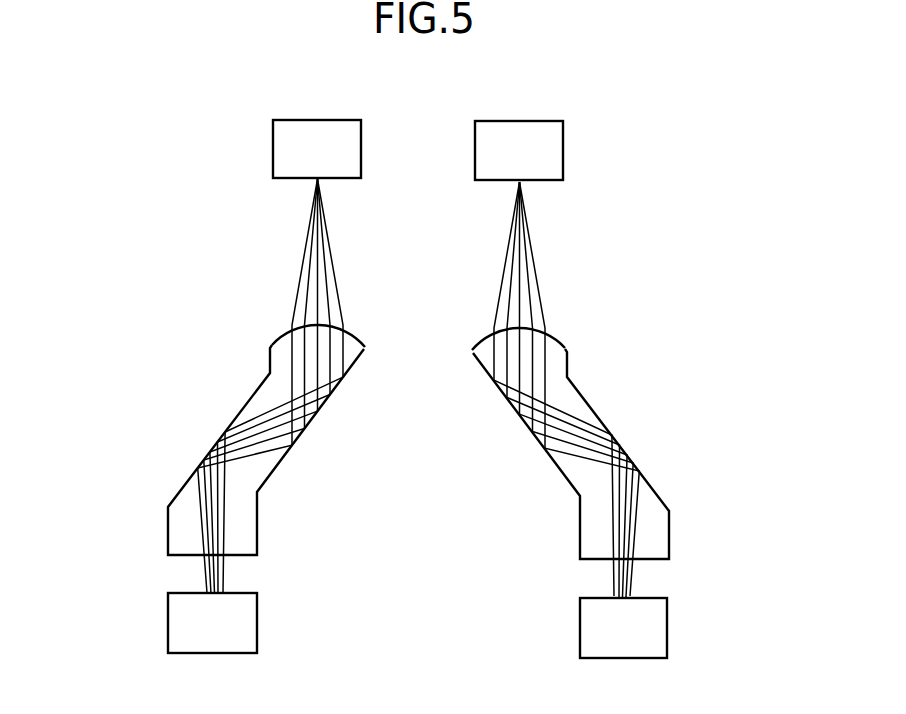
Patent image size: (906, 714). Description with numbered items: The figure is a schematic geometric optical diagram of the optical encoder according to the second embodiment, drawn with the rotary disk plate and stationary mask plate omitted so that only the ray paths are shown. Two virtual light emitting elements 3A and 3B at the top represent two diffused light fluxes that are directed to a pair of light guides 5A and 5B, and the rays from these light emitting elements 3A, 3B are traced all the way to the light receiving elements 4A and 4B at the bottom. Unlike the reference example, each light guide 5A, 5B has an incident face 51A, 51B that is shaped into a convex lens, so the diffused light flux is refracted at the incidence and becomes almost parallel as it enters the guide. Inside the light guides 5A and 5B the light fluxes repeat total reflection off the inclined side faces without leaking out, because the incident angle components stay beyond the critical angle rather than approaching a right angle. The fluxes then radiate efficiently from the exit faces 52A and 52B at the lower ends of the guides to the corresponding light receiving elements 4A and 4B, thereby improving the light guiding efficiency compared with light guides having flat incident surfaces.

The light emitting element 3A is at (322, 118).
The light emitting element 3B is at (519, 120).
The light receiving element 4A is at (168, 621).
The light receiving element 4B is at (668, 628).
The light guide 5A is at (208, 395).
The light guide 5B is at (629, 398).
The incident face 51A is at (281, 338).
The incident face 51B is at (556, 340).
The exit face 52A is at (237, 558).
The exit face 52B is at (600, 563).